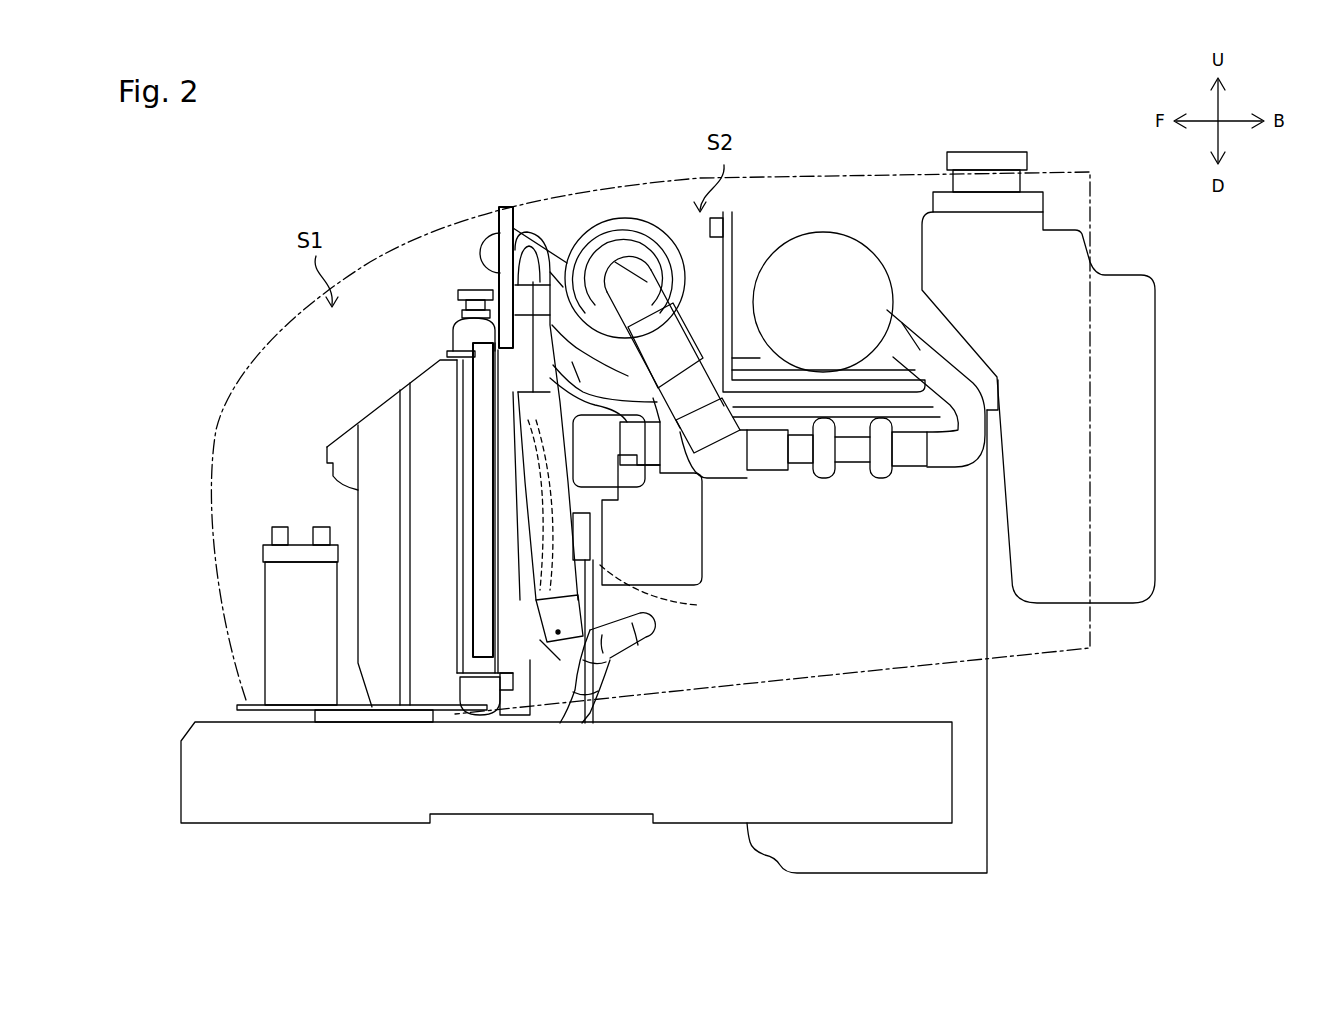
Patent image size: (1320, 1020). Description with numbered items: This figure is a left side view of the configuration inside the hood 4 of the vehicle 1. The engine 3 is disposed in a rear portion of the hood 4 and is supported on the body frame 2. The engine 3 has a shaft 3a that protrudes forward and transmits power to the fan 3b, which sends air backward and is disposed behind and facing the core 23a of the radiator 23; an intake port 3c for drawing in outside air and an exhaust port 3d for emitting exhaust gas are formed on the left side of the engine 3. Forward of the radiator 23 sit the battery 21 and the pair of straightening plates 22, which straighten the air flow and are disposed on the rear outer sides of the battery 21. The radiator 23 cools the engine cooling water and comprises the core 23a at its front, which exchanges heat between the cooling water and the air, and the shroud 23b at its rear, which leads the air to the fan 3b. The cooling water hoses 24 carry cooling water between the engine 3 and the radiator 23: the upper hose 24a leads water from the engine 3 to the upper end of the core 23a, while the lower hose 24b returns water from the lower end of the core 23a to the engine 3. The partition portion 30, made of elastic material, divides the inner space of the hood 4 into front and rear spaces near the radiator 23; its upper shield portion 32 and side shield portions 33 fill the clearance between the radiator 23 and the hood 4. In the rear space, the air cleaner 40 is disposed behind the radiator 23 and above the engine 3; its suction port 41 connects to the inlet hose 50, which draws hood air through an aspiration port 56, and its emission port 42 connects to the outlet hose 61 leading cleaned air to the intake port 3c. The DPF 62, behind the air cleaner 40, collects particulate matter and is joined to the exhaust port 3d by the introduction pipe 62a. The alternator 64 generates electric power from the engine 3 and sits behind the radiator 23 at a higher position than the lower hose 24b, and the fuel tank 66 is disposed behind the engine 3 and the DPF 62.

The vehicle 1 is at (126, 216).
The body frame 2 is at (297, 806).
The engine 3 is at (970, 712).
The shaft 3a is at (597, 540).
The fan 3b is at (665, 592).
The intake port 3c is at (806, 458).
The exhaust port 3d is at (910, 458).
The hood 4 is at (365, 243).
The battery 21 is at (285, 613).
The straightening plates 22 is at (326, 465).
The radiator 23 is at (458, 410).
The core 23a is at (467, 393).
The shroud 23b is at (521, 660).
The cooling water hoses 24 is at (627, 686).
The upper hose 24a is at (650, 445).
The lower hose 24b is at (632, 642).
The partition portion 30 is at (500, 198).
The upper shield portion 32 is at (497, 215).
The side shield portions 33 is at (482, 617).
The air cleaner 40 is at (620, 214).
The suction port 41 is at (563, 285).
The emission port 42 is at (655, 278).
The inlet hose 50 is at (480, 245).
The aspiration port 56 is at (570, 640).
The outlet hose 61 is at (771, 440).
The DPF 62 is at (826, 250).
The introduction pipe 62a is at (906, 322).
The alternator 64 is at (690, 533).
The fuel tank 66 is at (1146, 411).